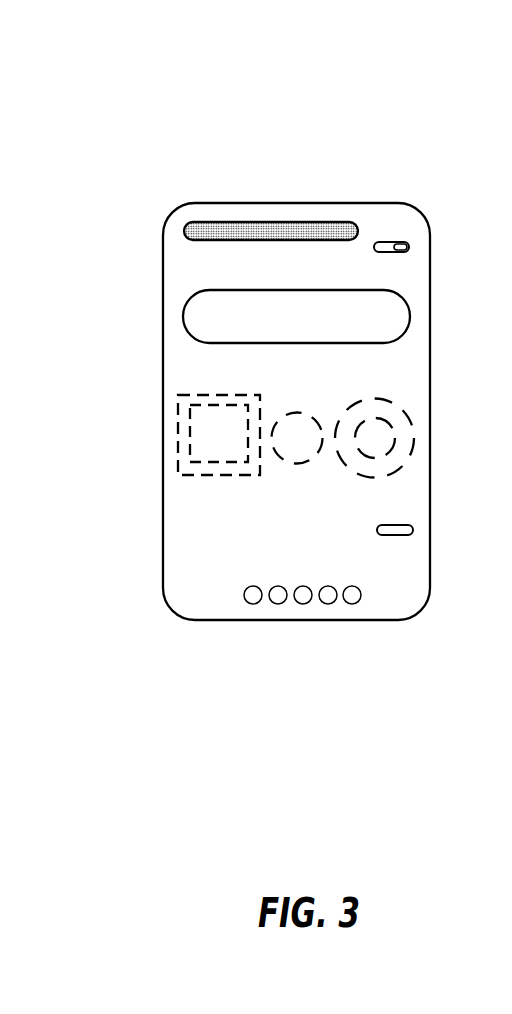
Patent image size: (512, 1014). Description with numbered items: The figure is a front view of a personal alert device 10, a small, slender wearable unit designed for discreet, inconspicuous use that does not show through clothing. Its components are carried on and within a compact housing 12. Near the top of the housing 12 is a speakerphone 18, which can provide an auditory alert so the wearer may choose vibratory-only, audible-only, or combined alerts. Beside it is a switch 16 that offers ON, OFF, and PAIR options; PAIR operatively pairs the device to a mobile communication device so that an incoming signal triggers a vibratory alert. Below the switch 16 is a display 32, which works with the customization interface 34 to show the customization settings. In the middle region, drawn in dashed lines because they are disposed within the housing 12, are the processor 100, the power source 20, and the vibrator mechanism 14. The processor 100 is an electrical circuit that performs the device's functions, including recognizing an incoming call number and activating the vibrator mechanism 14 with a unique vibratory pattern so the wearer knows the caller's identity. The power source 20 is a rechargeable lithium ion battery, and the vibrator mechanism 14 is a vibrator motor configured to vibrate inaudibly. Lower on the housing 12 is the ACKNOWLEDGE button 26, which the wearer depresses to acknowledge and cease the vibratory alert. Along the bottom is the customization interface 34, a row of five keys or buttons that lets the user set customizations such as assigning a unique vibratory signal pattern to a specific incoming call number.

The personal alert device 10 is at (67, 105).
The housing 12 is at (375, 203).
The vibrator mechanism 14 is at (364, 448).
The switch 16 is at (409, 247).
The speakerphone 18 is at (334, 222).
The power source 20 is at (286, 448).
The ACKNOWLEDGE button 26 is at (412, 528).
The display 32 is at (409, 314).
The customization interface 34 is at (362, 594).
The processor 100 is at (201, 440).